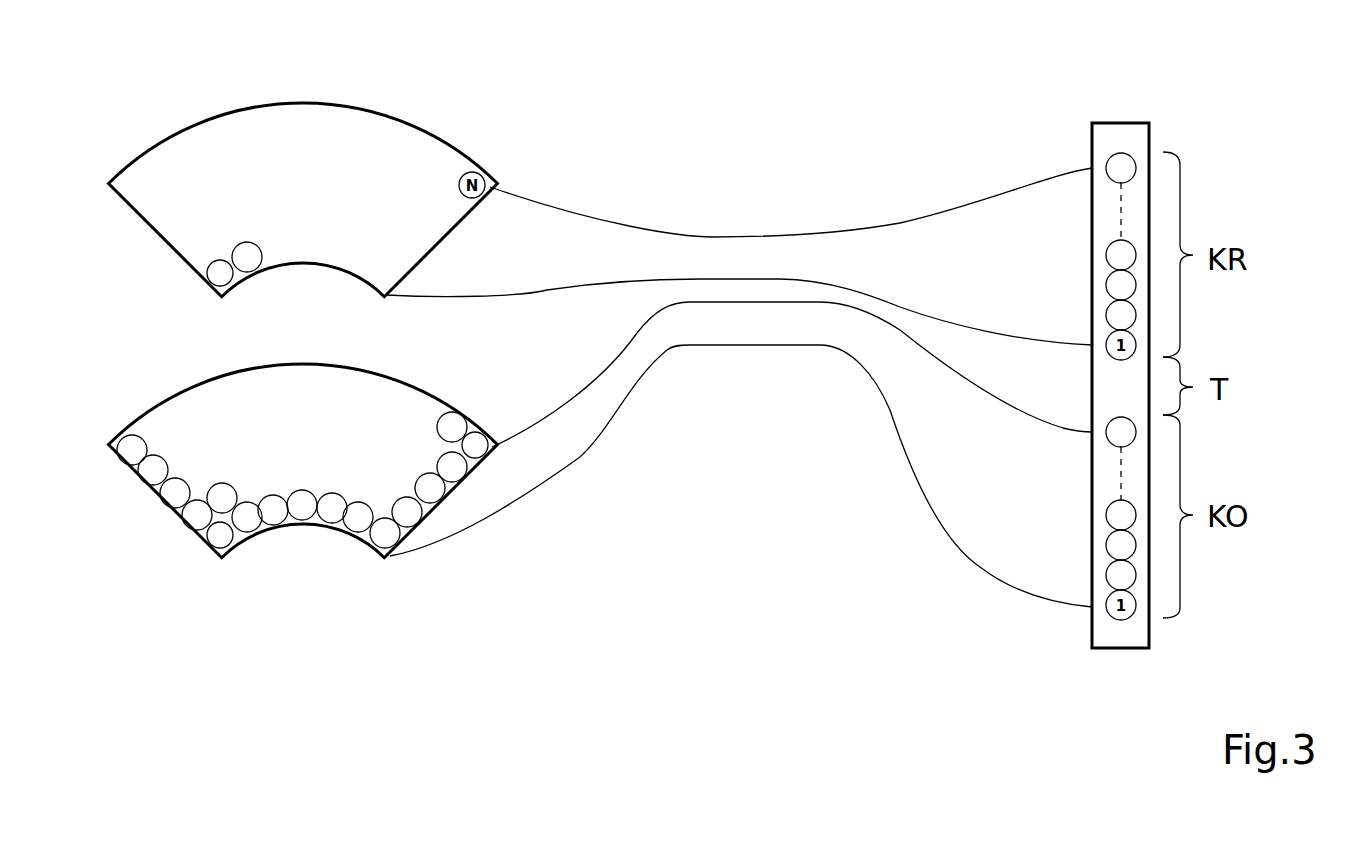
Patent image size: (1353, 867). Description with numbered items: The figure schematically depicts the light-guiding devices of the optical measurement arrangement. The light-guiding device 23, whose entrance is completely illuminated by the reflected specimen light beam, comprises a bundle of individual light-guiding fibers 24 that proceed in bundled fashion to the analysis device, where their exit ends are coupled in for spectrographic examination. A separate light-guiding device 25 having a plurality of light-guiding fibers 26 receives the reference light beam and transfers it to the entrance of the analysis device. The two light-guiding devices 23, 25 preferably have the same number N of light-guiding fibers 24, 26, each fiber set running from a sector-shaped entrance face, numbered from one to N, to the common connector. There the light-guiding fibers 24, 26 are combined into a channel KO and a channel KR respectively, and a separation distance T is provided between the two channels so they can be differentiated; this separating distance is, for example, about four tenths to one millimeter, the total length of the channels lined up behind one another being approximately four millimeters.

The light-guiding device 23 is at (787, 320).
The light-guiding fibers 24 is at (300, 512).
The light-guiding device 25 is at (740, 255).
The light-guiding fibers 26 is at (230, 284).